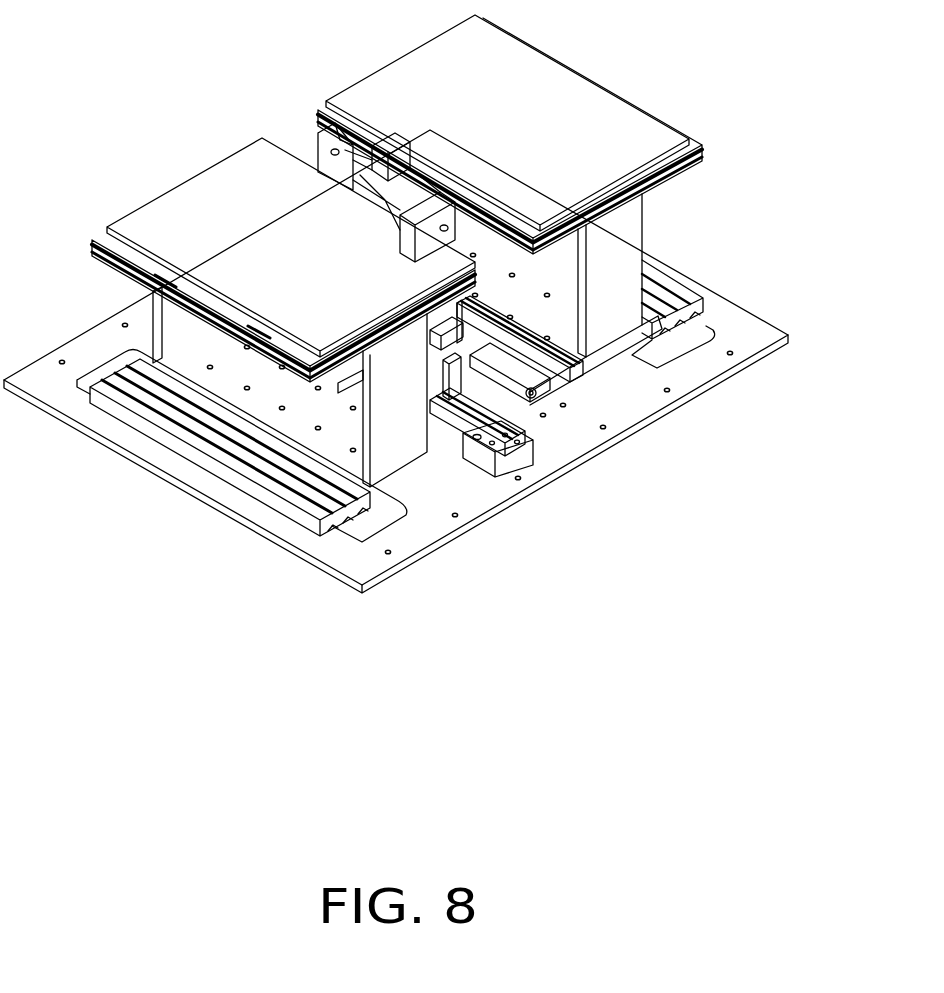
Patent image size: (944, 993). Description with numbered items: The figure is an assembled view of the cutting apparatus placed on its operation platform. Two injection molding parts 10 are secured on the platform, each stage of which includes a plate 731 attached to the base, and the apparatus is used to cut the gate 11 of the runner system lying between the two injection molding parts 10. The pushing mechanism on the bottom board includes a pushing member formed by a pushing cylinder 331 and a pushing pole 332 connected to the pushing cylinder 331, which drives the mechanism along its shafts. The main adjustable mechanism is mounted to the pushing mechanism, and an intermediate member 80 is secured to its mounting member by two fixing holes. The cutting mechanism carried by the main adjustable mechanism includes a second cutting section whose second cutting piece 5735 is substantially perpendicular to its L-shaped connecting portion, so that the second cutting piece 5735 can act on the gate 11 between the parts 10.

The injection molding parts 10 is at (567, 118).
The gate 11 is at (350, 143).
The second cutting piece 5735 is at (388, 137).
The plate 731 is at (624, 230).
The intermediate member 80 is at (560, 393).
The pushing cylinder 331 is at (495, 390).
The pushing pole 332 is at (443, 388).